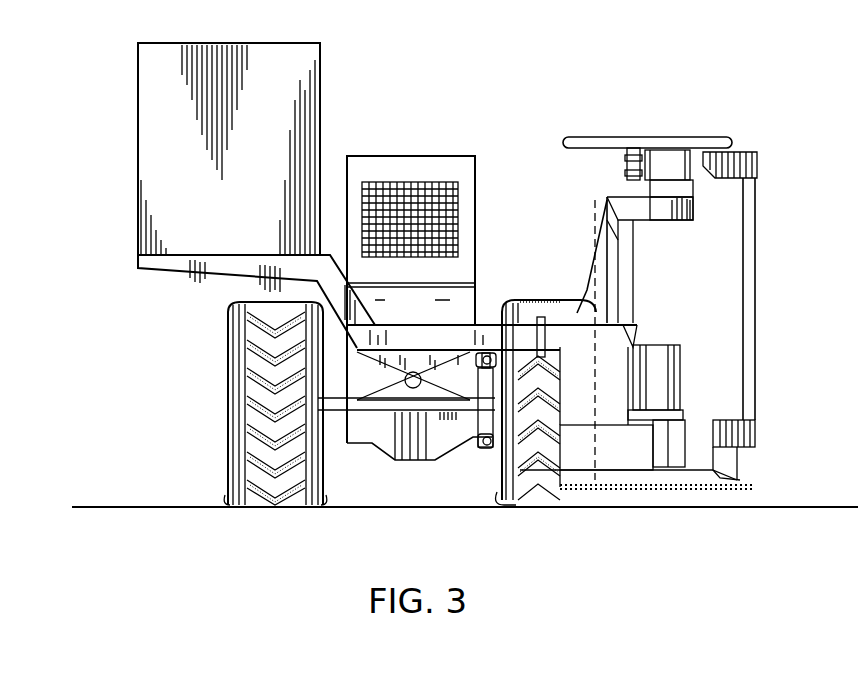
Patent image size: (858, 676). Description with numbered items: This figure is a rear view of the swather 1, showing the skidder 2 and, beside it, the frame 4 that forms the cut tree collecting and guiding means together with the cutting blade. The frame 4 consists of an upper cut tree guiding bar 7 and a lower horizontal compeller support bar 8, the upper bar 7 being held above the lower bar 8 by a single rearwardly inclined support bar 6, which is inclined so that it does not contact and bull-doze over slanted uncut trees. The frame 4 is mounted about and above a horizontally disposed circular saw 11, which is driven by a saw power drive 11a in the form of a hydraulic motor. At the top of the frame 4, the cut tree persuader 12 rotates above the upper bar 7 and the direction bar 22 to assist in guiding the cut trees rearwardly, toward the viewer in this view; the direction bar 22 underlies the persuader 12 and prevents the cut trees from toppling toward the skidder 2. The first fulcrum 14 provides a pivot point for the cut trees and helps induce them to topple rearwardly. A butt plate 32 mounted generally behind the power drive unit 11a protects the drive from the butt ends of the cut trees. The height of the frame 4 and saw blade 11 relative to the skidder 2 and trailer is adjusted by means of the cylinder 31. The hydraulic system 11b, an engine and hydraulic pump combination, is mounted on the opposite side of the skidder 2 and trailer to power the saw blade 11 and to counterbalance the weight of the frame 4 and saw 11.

The swather 1 is at (482, 91).
The skidder 2 is at (418, 322).
The frame 4 is at (772, 314).
The support bar 6 is at (755, 346).
The upper cut tree guiding bar 7 is at (728, 178).
The lower horizontal compeller support bar 8 is at (745, 433).
The circular saw 11 is at (700, 490).
The saw power drive 11a is at (672, 368).
The hydraulic system 11b is at (238, 183).
The cut tree persuader 12 is at (626, 137).
The first fulcrum 14 is at (653, 477).
The direction bar 22 is at (681, 221).
The cylinder 31 is at (480, 430).
The butt plate 32 is at (607, 447).